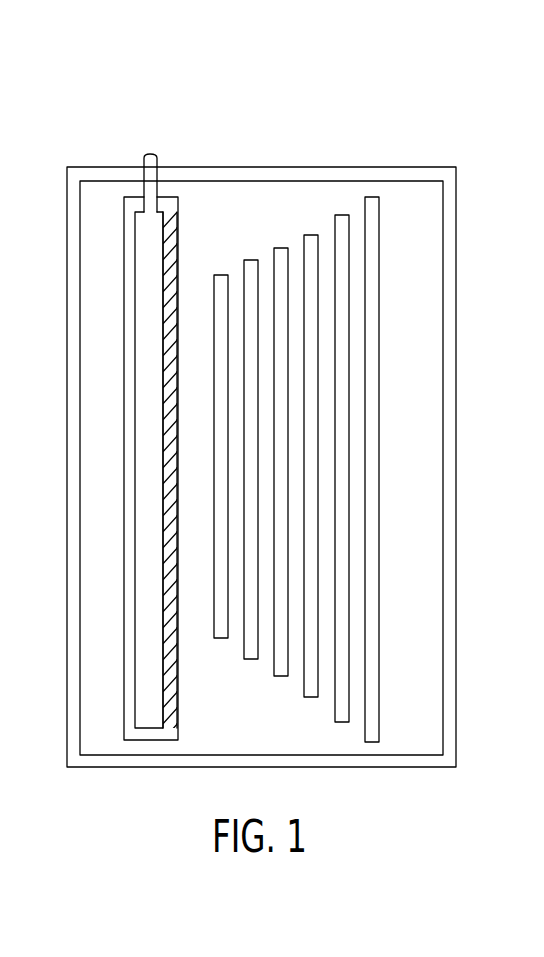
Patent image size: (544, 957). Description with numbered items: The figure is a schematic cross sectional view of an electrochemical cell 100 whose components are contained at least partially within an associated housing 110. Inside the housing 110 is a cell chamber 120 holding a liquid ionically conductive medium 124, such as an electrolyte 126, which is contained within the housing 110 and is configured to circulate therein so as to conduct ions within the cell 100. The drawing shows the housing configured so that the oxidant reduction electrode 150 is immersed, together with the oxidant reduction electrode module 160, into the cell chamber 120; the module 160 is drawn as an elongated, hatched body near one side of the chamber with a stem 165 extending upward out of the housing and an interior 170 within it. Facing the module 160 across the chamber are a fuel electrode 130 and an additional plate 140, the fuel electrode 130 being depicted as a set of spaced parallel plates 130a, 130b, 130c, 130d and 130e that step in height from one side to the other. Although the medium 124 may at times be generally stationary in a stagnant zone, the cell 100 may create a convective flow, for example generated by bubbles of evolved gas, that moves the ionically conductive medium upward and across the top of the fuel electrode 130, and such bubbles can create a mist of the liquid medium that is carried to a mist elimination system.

The electrochemical cell 100 is at (66, 124).
The housing 110 is at (296, 428).
The cell chamber 120 is at (206, 733).
The liquid ionically conductive medium 124 is at (418, 533).
The electrolyte 126 is at (428, 425).
The fuel electrode 130 is at (370, 437).
The first electrode plate 130a is at (372, 212).
The second electrode plate 130b is at (342, 225).
The third electrode plate 130c is at (311, 242).
The fourth electrode plate 130d is at (281, 255).
The fifth electrode plate 130e is at (251, 270).
The counter electrode plate 140 is at (220, 292).
The oxidant reduction electrode 150 is at (172, 237).
The oxidant reduction electrode module 160 is at (128, 223).
The inlet stem 165 is at (150, 192).
The tube interior 170 is at (150, 254).